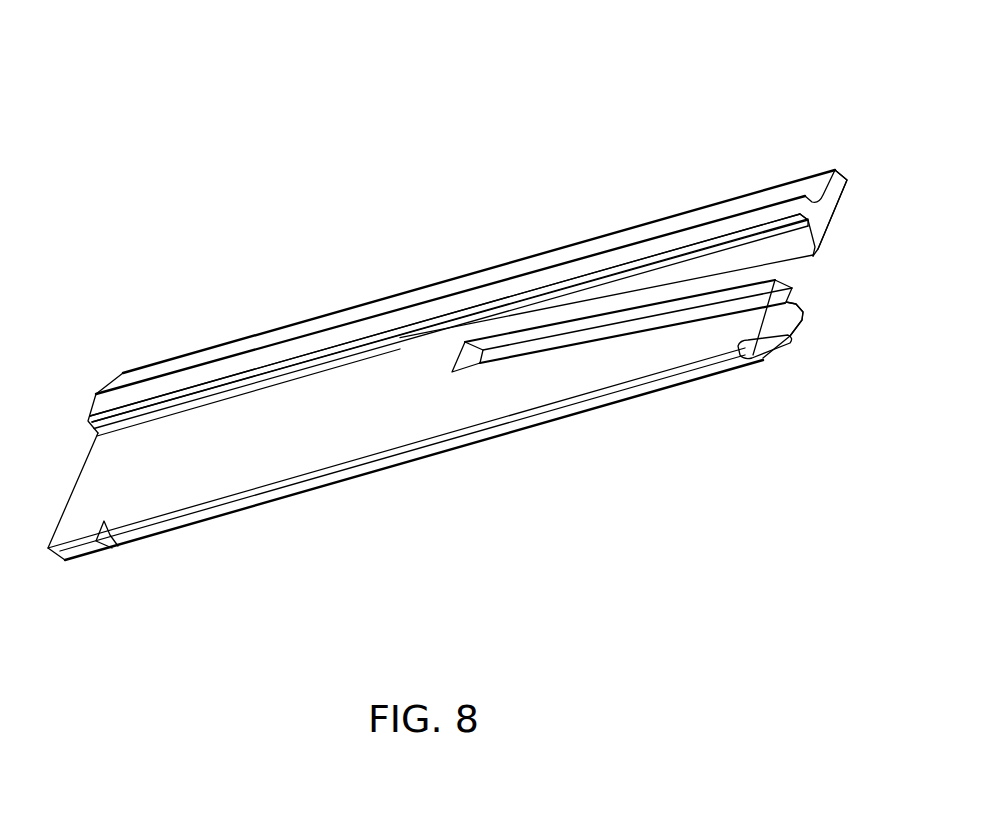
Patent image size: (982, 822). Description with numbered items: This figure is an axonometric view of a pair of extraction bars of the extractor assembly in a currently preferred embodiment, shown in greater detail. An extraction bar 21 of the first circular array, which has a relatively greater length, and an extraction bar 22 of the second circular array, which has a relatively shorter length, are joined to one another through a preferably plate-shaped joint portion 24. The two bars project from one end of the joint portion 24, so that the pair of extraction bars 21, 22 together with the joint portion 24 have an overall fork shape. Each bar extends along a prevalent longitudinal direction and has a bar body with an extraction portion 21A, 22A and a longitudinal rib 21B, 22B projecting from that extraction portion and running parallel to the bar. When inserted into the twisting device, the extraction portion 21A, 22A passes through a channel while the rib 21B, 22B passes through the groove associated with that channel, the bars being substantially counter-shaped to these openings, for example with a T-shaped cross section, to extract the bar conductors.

The extraction bar 21 is at (500, 266).
The extraction portion 21A is at (782, 190).
The longitudinal rib 21B is at (720, 232).
The extraction bar 22 is at (555, 422).
The extraction portion 22A is at (762, 342).
The longitudinal rib 22B is at (797, 323).
The joint portion 24 is at (312, 410).